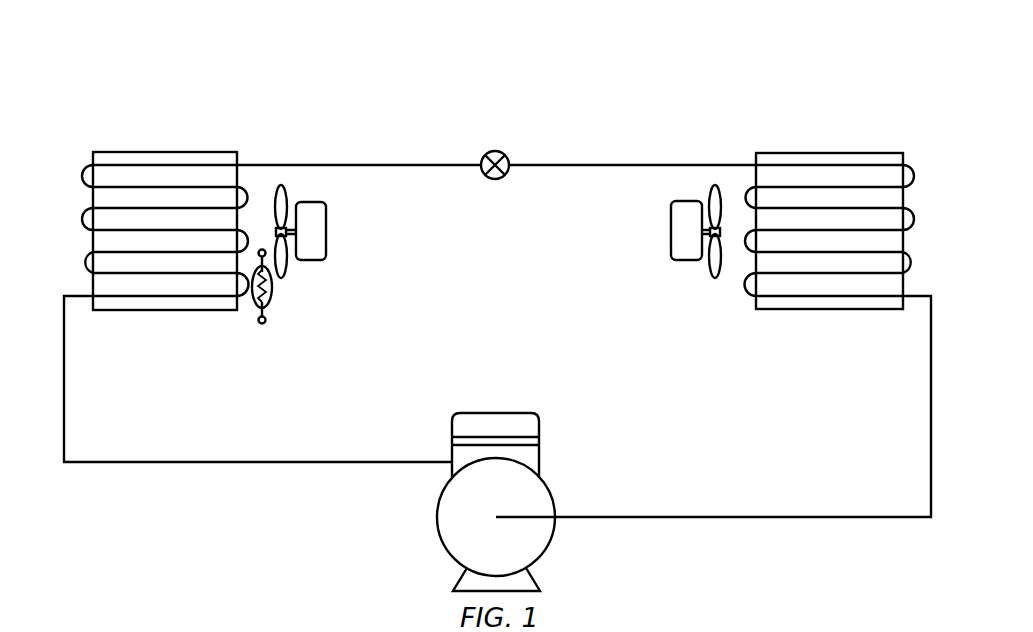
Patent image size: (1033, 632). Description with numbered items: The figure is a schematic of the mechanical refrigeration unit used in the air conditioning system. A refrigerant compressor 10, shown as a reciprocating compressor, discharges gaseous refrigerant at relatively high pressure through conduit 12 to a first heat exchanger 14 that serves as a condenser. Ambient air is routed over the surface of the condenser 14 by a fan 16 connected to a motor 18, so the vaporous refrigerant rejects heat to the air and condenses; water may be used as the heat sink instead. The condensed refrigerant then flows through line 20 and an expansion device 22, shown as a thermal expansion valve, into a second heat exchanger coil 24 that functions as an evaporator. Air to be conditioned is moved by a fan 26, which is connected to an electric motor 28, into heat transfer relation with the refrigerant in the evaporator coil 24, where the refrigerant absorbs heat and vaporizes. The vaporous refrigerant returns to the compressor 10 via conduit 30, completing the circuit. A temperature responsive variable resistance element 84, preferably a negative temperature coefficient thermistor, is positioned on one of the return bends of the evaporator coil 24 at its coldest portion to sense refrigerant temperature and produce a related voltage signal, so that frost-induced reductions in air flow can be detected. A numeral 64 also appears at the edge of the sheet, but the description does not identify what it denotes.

The refrigerant compressor 10 is at (545, 480).
The conduit 12 is at (727, 516).
The first heat exchanger 14 is at (817, 153).
The fan 16 is at (710, 262).
The motor 18 is at (671, 210).
The line 20 is at (620, 165).
The expansion device 22 is at (504, 154).
The second heat exchanger coil 24 is at (183, 152).
The fan 26 is at (287, 274).
The electric motor 28 is at (326, 214).
The conduit 30 is at (305, 461).
The temperature responsive variable resistance element 84 is at (271, 304).
The reference numeral (adjacent figure) 64 is at (288, 631).